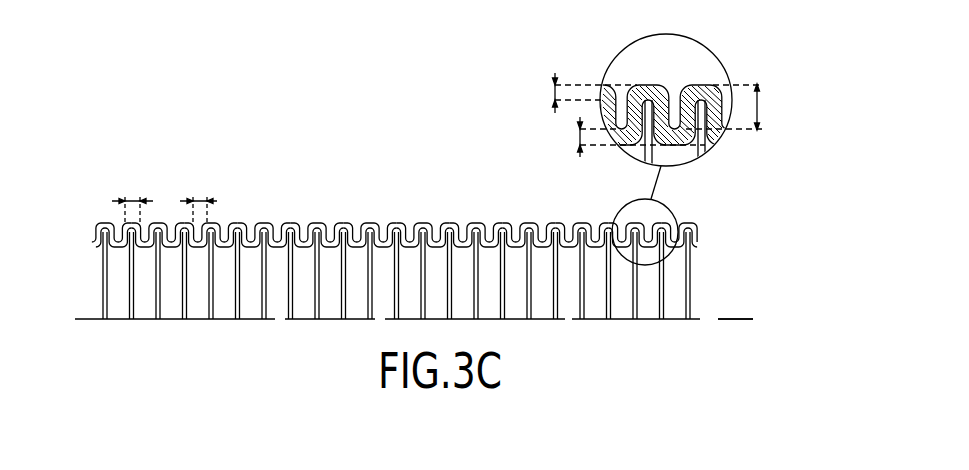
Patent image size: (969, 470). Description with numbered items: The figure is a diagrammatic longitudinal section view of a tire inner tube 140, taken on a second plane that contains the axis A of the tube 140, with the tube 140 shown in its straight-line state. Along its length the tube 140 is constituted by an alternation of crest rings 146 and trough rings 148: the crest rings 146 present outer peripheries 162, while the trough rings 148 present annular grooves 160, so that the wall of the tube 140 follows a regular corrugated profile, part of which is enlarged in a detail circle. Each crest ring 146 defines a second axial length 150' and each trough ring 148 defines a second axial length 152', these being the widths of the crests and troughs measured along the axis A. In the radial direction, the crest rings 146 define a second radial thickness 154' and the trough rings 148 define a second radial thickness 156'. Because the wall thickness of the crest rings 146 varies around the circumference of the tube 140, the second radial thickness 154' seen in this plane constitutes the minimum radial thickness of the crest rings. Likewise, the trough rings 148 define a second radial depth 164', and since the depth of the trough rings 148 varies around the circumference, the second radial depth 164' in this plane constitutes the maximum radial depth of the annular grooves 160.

The tube 140 is at (106, 181).
The crest rings 146 is at (345, 223).
The trough rings 148 is at (407, 226).
The second axial length 150' is at (136, 193).
The second axial length 152' is at (202, 193).
The second radial thickness 154' is at (606, 93).
The second radial thickness 156' is at (647, 137).
The annular grooves 160 is at (463, 222).
The peripheries 162 is at (503, 224).
The second radial depth 164' is at (814, 107).
The axis A is at (735, 318).